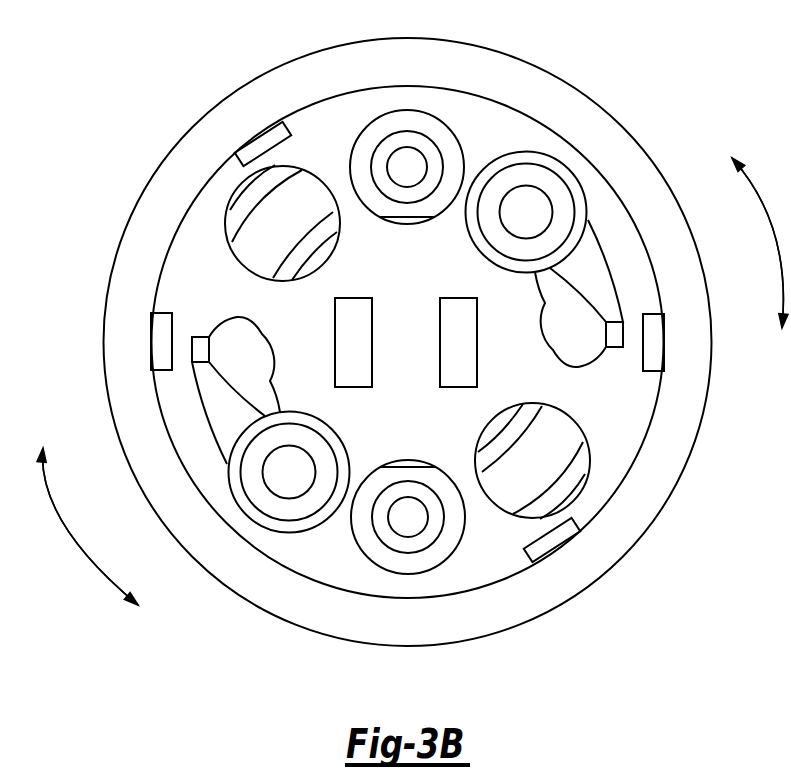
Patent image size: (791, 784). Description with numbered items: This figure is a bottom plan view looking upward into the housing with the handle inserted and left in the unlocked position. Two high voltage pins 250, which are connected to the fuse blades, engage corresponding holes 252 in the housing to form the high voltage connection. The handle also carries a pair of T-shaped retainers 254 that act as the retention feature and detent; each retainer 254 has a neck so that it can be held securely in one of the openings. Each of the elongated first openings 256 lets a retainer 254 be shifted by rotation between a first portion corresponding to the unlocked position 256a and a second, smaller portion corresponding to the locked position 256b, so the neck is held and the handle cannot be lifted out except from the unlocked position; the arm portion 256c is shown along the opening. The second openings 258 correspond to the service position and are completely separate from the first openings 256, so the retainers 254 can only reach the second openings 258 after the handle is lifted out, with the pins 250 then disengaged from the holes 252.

The high voltage pins 250 is at (407, 167).
The holes 252 is at (380, 155).
The retainers 254 is at (558, 190).
The first openings 256 is at (606, 322).
The unlocked position 256a is at (412, 383).
The locked position 256b is at (407, 381).
The lever arm portion 256c is at (602, 273).
The second openings 258 is at (235, 220).